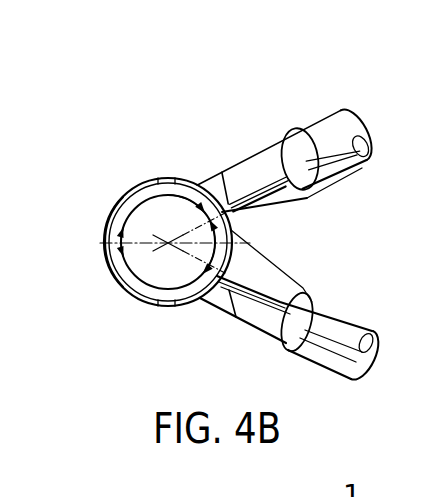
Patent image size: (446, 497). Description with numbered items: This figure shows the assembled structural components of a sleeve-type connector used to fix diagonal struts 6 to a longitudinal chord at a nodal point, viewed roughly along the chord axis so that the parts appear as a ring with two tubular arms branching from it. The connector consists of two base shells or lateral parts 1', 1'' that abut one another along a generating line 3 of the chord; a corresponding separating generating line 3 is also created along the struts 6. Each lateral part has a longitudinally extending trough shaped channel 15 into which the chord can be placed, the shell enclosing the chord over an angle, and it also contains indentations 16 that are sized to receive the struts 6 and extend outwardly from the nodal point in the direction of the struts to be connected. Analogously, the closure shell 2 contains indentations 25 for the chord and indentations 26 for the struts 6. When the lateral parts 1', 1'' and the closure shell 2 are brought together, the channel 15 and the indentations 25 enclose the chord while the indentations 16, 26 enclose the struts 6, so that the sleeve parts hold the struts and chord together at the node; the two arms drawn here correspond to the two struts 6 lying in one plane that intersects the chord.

The base shell 1' is at (282, 156).
The base shell 1'' is at (286, 327).
The closure shell 2 is at (283, 281).
The generating line 3 is at (104, 233).
The diagonal strut 6 is at (367, 155).
The longitudinal trough shaped channel 15 is at (126, 178).
The indentation for the struts 16 is at (210, 165).
The indentation for the chord 25 is at (246, 248).
The indentation for the struts 26 is at (319, 303).